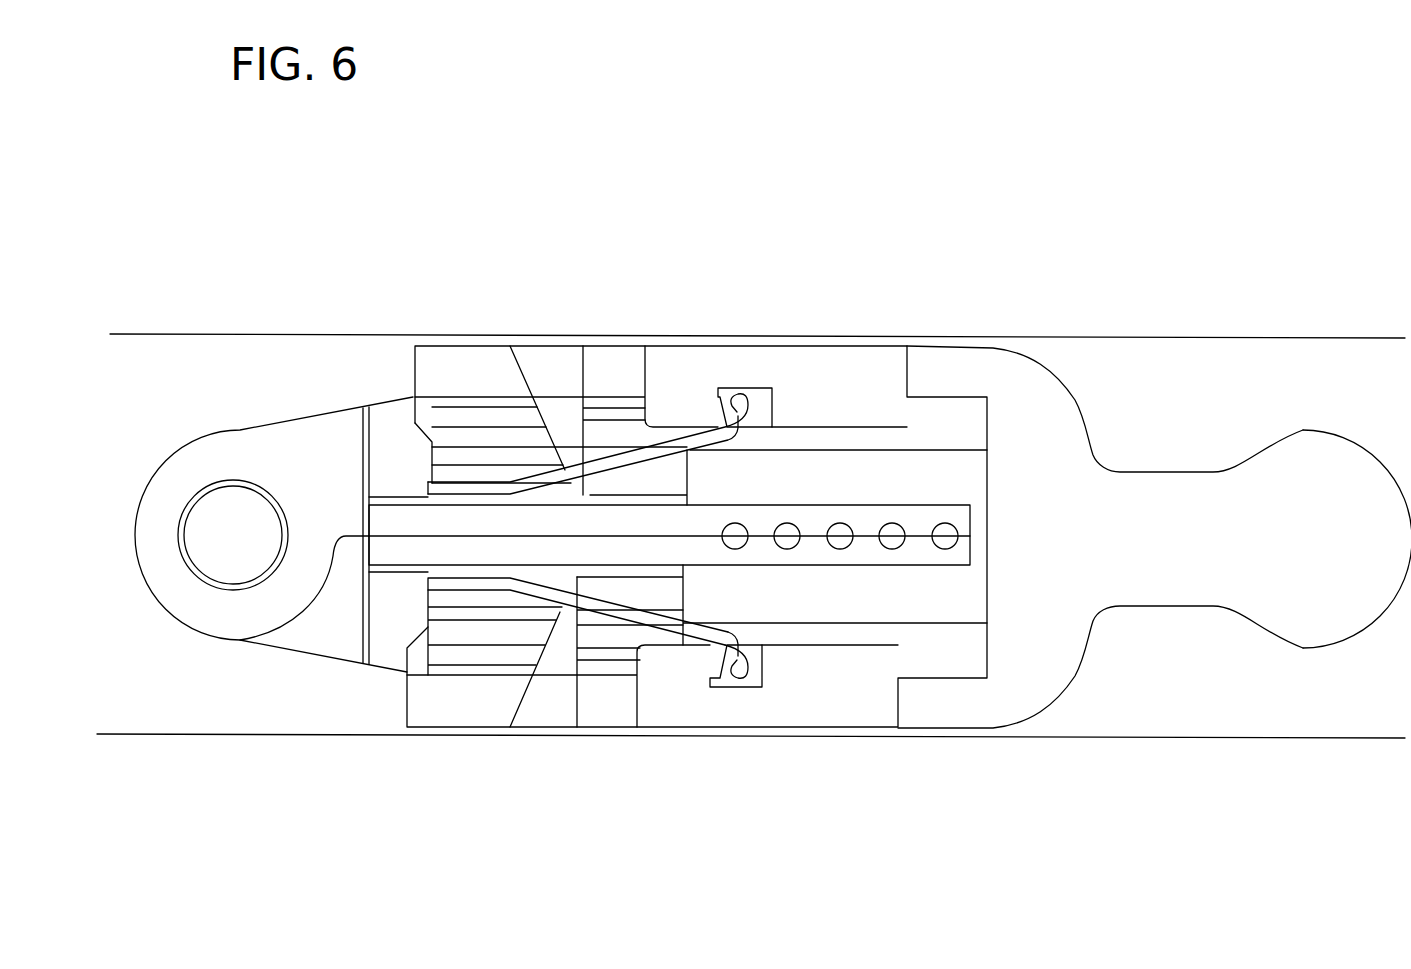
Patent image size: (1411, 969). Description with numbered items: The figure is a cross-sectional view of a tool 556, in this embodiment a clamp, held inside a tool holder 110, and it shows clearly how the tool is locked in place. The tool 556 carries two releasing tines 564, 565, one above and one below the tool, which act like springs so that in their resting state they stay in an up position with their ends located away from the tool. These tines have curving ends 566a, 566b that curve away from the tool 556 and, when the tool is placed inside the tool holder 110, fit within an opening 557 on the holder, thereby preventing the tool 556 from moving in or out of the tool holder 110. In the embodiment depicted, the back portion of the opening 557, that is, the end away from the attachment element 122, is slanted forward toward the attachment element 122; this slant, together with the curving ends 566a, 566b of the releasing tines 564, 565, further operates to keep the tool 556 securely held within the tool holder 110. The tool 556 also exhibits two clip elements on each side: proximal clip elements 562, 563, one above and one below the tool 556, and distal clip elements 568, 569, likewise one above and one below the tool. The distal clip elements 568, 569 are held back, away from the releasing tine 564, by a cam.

The tool holder 110 is at (1028, 380).
The attachment element 122 is at (1337, 437).
The tool 556 is at (943, 570).
The opening 557 is at (725, 395).
The proximal clip element 562 is at (472, 417).
The proximal clip element 563 is at (475, 628).
The releasing tine 564 is at (617, 457).
The releasing tine 565 is at (703, 630).
The curving end of releasing tine 566a is at (750, 395).
The curving end of releasing tine 566b is at (757, 658).
The distal clip element 568 is at (583, 447).
The distal clip element 569 is at (612, 633).